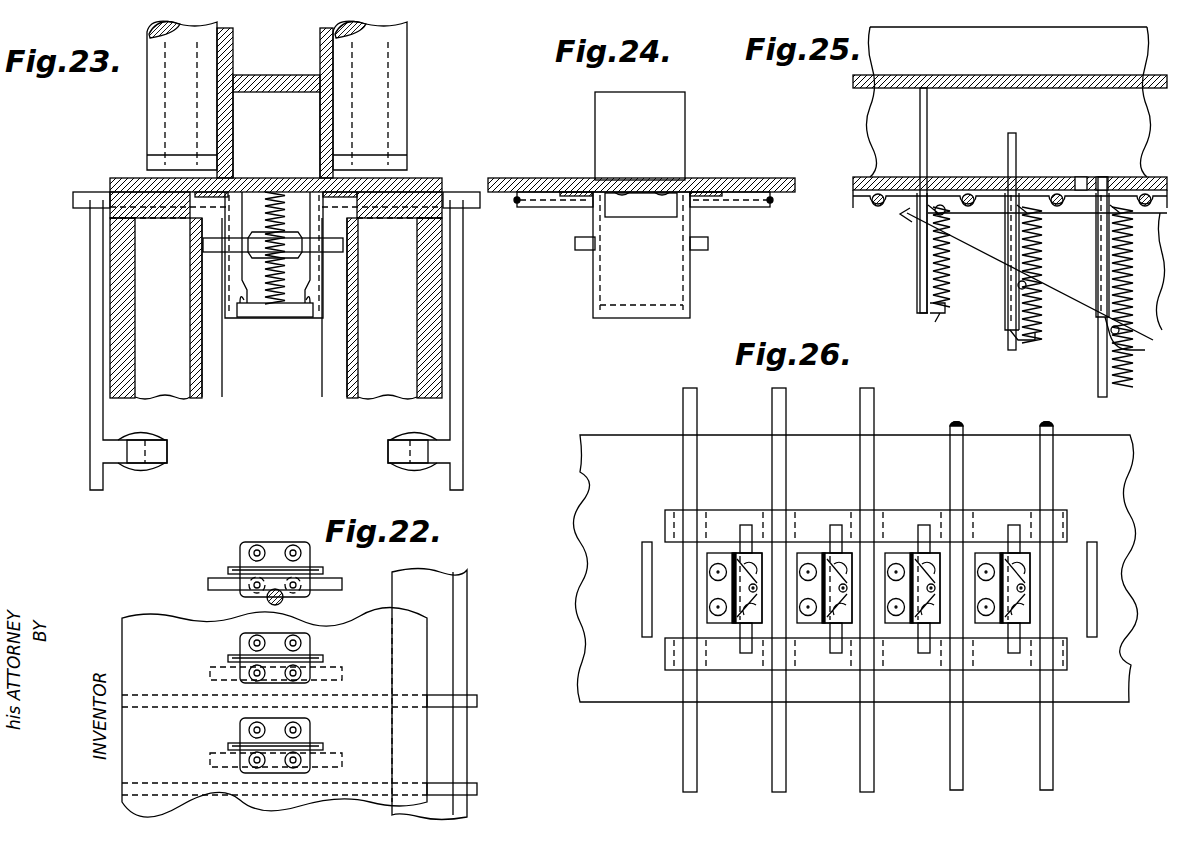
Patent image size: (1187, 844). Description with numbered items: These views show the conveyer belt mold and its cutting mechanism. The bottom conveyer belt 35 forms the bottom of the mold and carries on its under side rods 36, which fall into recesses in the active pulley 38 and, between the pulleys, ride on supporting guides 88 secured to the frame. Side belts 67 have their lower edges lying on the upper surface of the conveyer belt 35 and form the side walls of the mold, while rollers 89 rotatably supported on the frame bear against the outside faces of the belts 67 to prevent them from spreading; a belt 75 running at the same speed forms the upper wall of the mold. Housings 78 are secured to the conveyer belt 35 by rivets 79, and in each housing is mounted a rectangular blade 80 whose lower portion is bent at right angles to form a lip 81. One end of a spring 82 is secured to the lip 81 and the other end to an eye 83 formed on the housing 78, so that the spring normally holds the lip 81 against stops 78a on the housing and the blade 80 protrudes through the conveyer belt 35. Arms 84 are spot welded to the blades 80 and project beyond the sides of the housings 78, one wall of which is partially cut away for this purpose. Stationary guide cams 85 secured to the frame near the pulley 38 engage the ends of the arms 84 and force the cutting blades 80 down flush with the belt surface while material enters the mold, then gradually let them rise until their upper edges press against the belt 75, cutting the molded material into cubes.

In FIG. 23, the conveyer belt 35 is at (415, 178).
In FIG. 22, the conveyer belt 35 is at (274, 712).
In FIG. 24, the conveyer belt 35 is at (715, 178).
In FIG. 25, the conveyer belt 35 is at (1075, 177).
In FIG. 26, the conveyer belt 35 is at (855, 568).
In FIG. 23, the rods 36 is at (78, 200).
In FIG. 22, the rods 36 is at (477, 701).
In FIG. 24, the rods 36 is at (760, 202).
In FIG. 25, the rods 36 is at (872, 205).
In FIG. 26, the rods 36 is at (772, 784).
In FIG. 23, the active pulley 38 is at (276, 295).
In FIG. 23, the belts 67 is at (320, 45).
In FIG. 25, the belts 67 is at (1008, 102).
In FIG. 23, the belt 75 is at (270, 75).
In FIG. 25, the belt 75 is at (920, 75).
In FIG. 23, the housings 78 is at (300, 318).
In FIG. 22, the housings 78 is at (228, 568).
In FIG. 24, the housings 78 is at (670, 273).
In FIG. 25, the housings 78 is at (917, 275).
In FIG. 23, the stops 78a is at (316, 320).
In FIG. 22, the rivets 79 is at (250, 640).
In FIG. 24, the rivets 79 is at (660, 190).
In FIG. 26, the rivets 79 is at (810, 563).
In FIG. 23, the blades 80 is at (276, 135).
In FIG. 22, the blades 80 is at (252, 567).
In FIG. 24, the blades 80 is at (640, 136).
In FIG. 25, the blades 80 is at (920, 134).
In FIG. 23, the lip 81 is at (260, 317).
In FIG. 25, the lip 81 is at (1041, 356).
In FIG. 26, the lip 81 is at (752, 605).
In FIG. 23, the spring 82 is at (275, 312).
In FIG. 25, the spring 82 is at (950, 272).
In FIG. 25, the eye 83 is at (945, 210).
In FIG. 23, the arms 84 is at (292, 238).
In FIG. 24, the arms 84 is at (705, 243).
In FIG. 25, the arms 84 is at (920, 236).
In FIG. 26, the arms 84 is at (745, 525).
In FIG. 23, the stationary guide cams 85 is at (213, 372).
In FIG. 25, the stationary guide cams 85 is at (1047, 253).
In FIG. 23, the supporting guides 88 is at (95, 368).
In FIG. 22, the supporting guides 88 is at (457, 622).
In FIG. 23, the rollers 89 is at (160, 133).